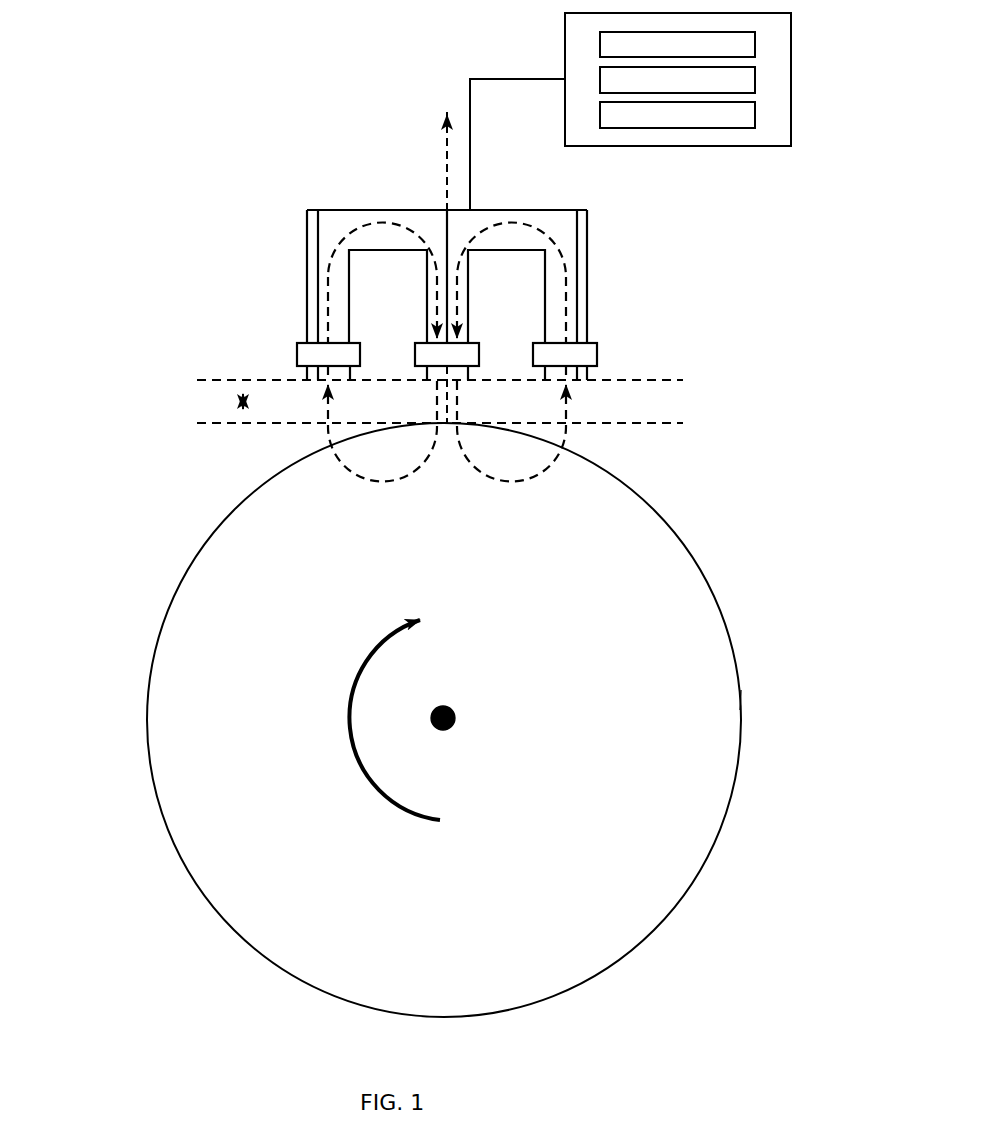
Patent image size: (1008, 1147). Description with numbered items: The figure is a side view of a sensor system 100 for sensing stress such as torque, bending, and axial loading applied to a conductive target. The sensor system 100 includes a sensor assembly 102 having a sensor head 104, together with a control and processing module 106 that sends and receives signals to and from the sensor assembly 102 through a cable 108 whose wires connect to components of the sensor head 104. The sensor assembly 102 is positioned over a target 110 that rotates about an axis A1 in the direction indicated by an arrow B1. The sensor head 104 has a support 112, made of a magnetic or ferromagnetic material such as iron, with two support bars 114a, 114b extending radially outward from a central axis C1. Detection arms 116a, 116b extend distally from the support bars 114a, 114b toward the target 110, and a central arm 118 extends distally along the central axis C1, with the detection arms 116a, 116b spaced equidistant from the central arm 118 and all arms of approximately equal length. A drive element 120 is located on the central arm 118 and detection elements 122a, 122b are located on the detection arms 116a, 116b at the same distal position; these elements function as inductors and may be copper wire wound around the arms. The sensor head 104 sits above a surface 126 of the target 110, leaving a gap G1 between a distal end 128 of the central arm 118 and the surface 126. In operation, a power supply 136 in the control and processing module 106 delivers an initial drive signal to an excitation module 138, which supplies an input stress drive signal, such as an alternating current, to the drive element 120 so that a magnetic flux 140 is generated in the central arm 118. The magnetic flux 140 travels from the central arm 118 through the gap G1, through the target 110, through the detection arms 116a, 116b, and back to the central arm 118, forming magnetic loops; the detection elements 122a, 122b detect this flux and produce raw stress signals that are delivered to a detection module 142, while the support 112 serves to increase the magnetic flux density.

The sensor system 100 is at (172, 73).
The sensor assembly 102 is at (435, 291).
The sensor head 104 is at (452, 291).
The control and processing module 106 is at (740, 147).
The cable 108 is at (517, 78).
The target 110 is at (705, 545).
The support 112 is at (422, 220).
The support bar 114a is at (518, 210).
The support bar 114b is at (342, 209).
The detection arm 116a is at (588, 278).
The detection arm 116b is at (307, 273).
The central arm 118 is at (425, 278).
The drive element 120 is at (475, 342).
The detection element 122a is at (597, 355).
The detection element 122b is at (297, 348).
The surface 126 is at (740, 680).
The distal end 128 is at (464, 382).
The power supply 136 is at (755, 49).
The excitation module 138 is at (755, 85).
The magnetic flux 140 is at (430, 318).
The detection module 142 is at (755, 120).
The gap G1 is at (242, 398).
The central axis C1 is at (445, 138).
The axis A1 is at (456, 715).
The arrow B1 is at (411, 618).